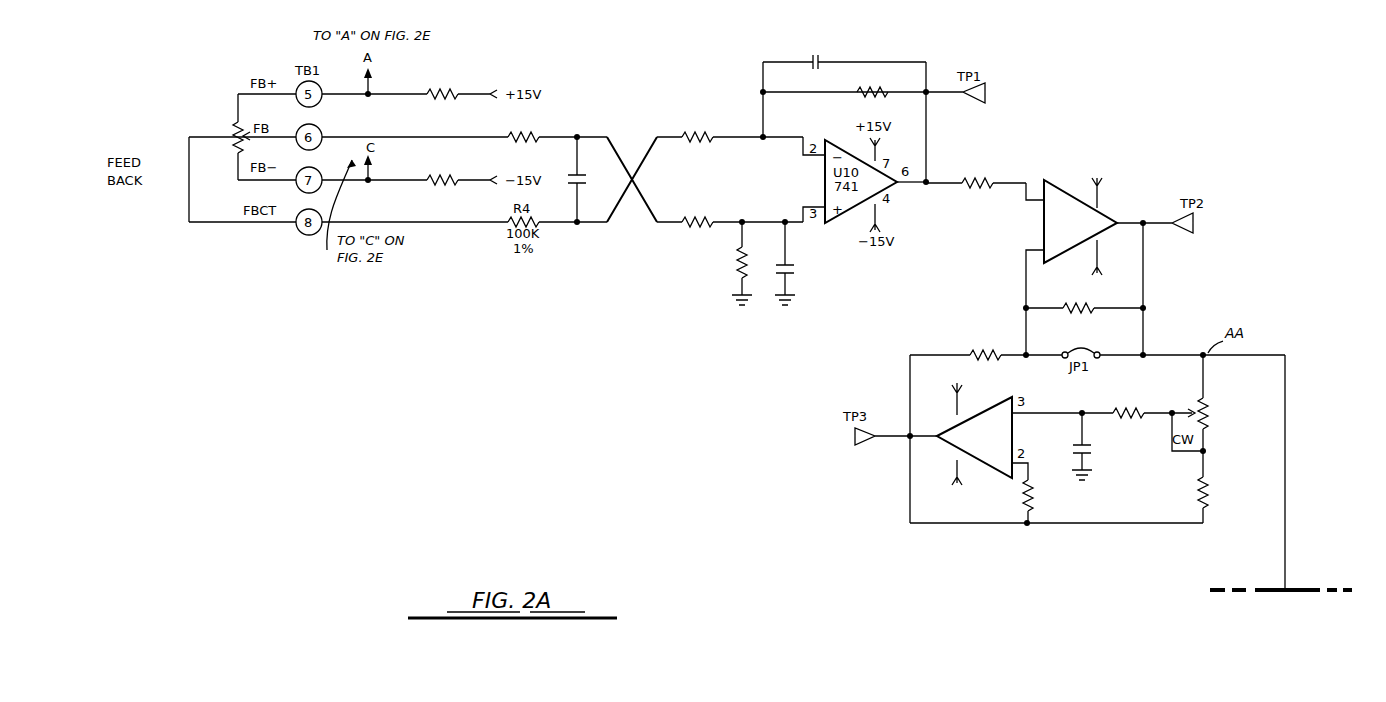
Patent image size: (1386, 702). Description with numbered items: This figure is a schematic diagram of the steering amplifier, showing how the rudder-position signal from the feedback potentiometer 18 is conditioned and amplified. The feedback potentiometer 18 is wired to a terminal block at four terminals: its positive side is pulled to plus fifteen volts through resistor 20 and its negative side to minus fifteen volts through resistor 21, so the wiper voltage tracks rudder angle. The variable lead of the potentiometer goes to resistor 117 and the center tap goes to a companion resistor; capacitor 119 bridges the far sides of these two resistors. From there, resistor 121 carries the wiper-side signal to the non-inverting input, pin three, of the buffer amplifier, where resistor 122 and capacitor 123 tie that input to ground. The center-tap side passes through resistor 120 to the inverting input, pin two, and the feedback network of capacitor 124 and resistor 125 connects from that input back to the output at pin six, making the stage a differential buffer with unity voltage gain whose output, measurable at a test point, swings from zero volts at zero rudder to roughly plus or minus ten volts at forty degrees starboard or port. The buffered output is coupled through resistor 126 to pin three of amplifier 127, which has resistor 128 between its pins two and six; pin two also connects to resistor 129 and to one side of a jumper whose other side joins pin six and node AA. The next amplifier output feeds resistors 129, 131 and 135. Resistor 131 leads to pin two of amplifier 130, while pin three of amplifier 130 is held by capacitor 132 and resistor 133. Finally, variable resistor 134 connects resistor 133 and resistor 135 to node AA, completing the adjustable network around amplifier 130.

The feedback potentiometer 18 is at (232, 128).
The resistor 20 is at (455, 92).
The resistor 21 is at (453, 176).
The resistor 117 is at (540, 134).
The capacitor 119 is at (580, 173).
The resistor 120 is at (708, 130).
The resistor 121 is at (708, 216).
The resistor 122 is at (746, 270).
The capacitor 123 is at (796, 283).
The capacitor 124 is at (820, 58).
The resistor 125 is at (886, 90).
The resistor 126 is at (988, 178).
The amplifier 127 is at (1100, 218).
The resistor 128 is at (1096, 305).
The resistor 129 is at (997, 352).
The amplifier 130 is at (995, 400).
The resistor 131 is at (1034, 493).
The capacitor 132 is at (1085, 443).
The resistor 133 is at (1139, 408).
The variable resistor 134 is at (1207, 401).
The resistor 135 is at (1210, 481).